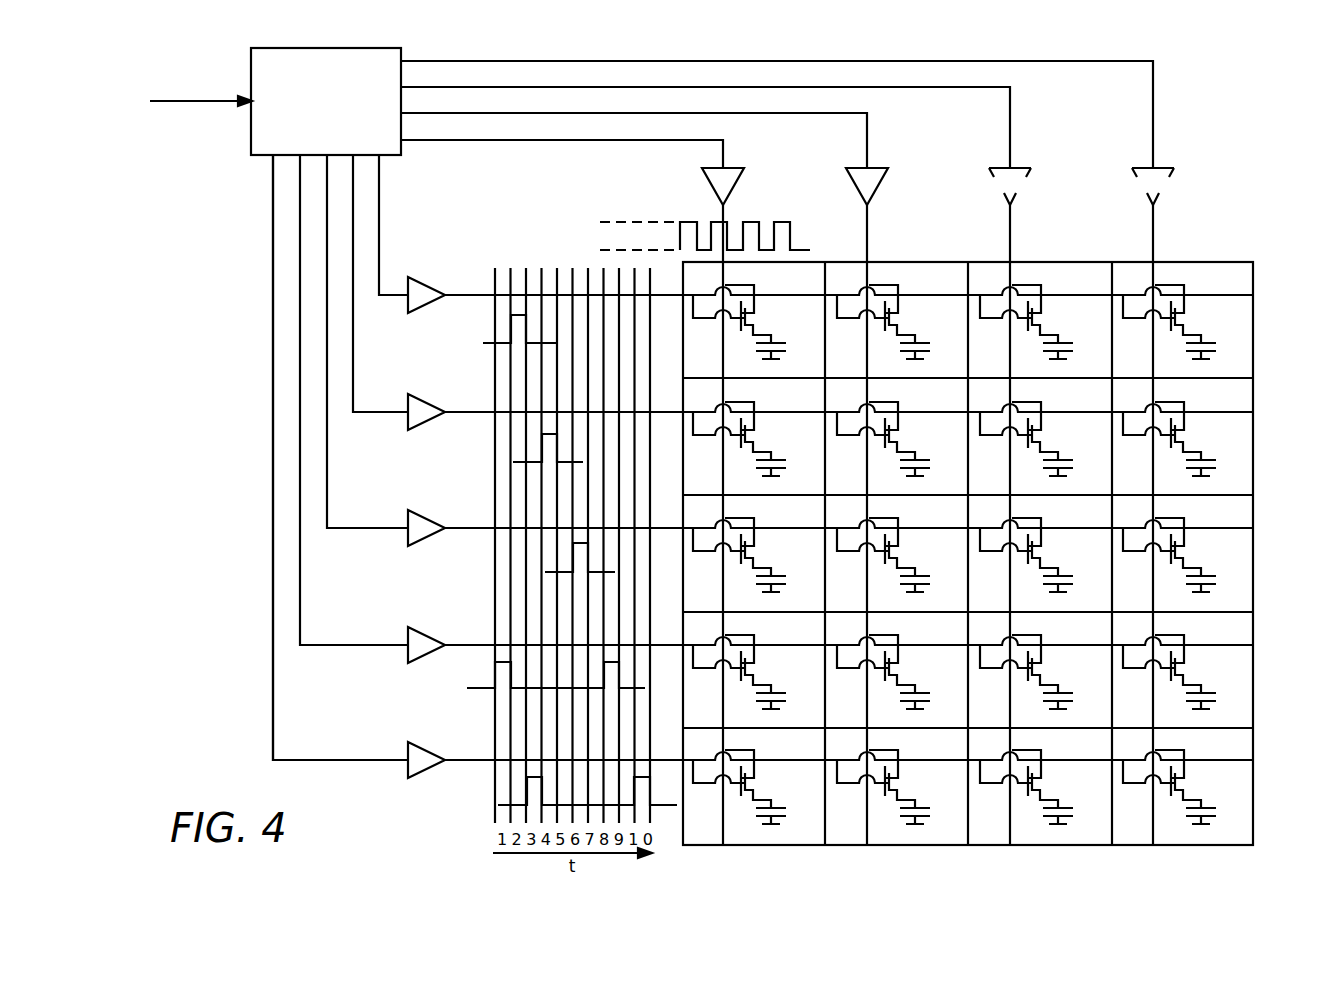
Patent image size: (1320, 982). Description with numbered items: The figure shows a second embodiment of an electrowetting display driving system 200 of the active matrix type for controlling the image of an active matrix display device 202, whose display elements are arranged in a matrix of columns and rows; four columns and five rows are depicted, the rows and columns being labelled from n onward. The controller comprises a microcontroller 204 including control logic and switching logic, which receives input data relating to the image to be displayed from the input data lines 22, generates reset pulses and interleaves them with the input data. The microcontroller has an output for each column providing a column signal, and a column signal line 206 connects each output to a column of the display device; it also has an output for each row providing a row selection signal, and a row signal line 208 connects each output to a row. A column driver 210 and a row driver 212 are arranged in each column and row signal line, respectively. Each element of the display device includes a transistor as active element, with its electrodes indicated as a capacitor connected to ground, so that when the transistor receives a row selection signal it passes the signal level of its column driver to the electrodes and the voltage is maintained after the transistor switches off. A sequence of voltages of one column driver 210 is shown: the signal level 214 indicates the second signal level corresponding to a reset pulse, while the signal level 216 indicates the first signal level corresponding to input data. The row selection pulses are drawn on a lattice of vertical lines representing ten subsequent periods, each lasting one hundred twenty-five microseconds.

The input data lines 22 is at (202, 100).
The display driving system 200 is at (345, 42).
The active matrix display device 202 is at (1253, 262).
The microcontroller 204 is at (251, 156).
The column signal line 206 is at (435, 61).
The row signal line 208 is at (273, 335).
The column driver 210 is at (708, 183).
The row driver 212 is at (428, 277).
The signal level 214 is at (600, 222).
The signal level 216 is at (600, 248).